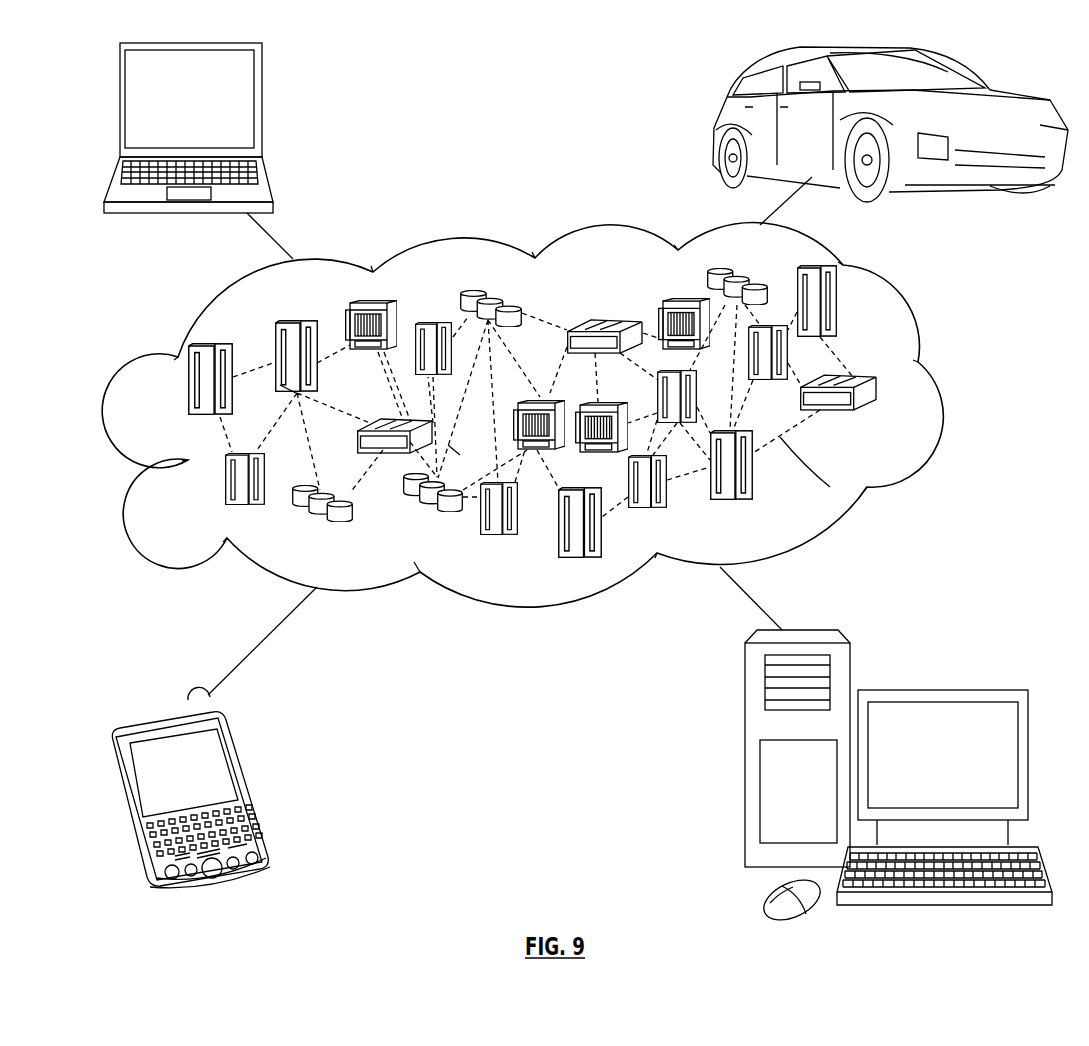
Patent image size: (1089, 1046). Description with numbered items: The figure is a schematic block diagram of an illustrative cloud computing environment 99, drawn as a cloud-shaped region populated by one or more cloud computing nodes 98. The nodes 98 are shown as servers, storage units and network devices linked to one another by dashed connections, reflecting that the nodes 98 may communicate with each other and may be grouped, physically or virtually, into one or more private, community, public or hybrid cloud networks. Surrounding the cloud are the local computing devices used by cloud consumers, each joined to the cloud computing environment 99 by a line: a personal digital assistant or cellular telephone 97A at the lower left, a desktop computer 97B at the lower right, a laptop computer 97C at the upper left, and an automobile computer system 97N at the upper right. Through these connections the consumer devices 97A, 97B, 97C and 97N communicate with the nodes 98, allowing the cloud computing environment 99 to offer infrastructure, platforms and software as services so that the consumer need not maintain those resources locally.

The personal digital assistant (PDA) or cellular telephone 97A is at (254, 786).
The desktop computer 97B is at (940, 690).
The laptop computer 97C is at (262, 107).
The automobile computer system 97N is at (713, 122).
The cloud computing nodes 98 is at (880, 421).
The cloud computing environment 99 is at (940, 392).